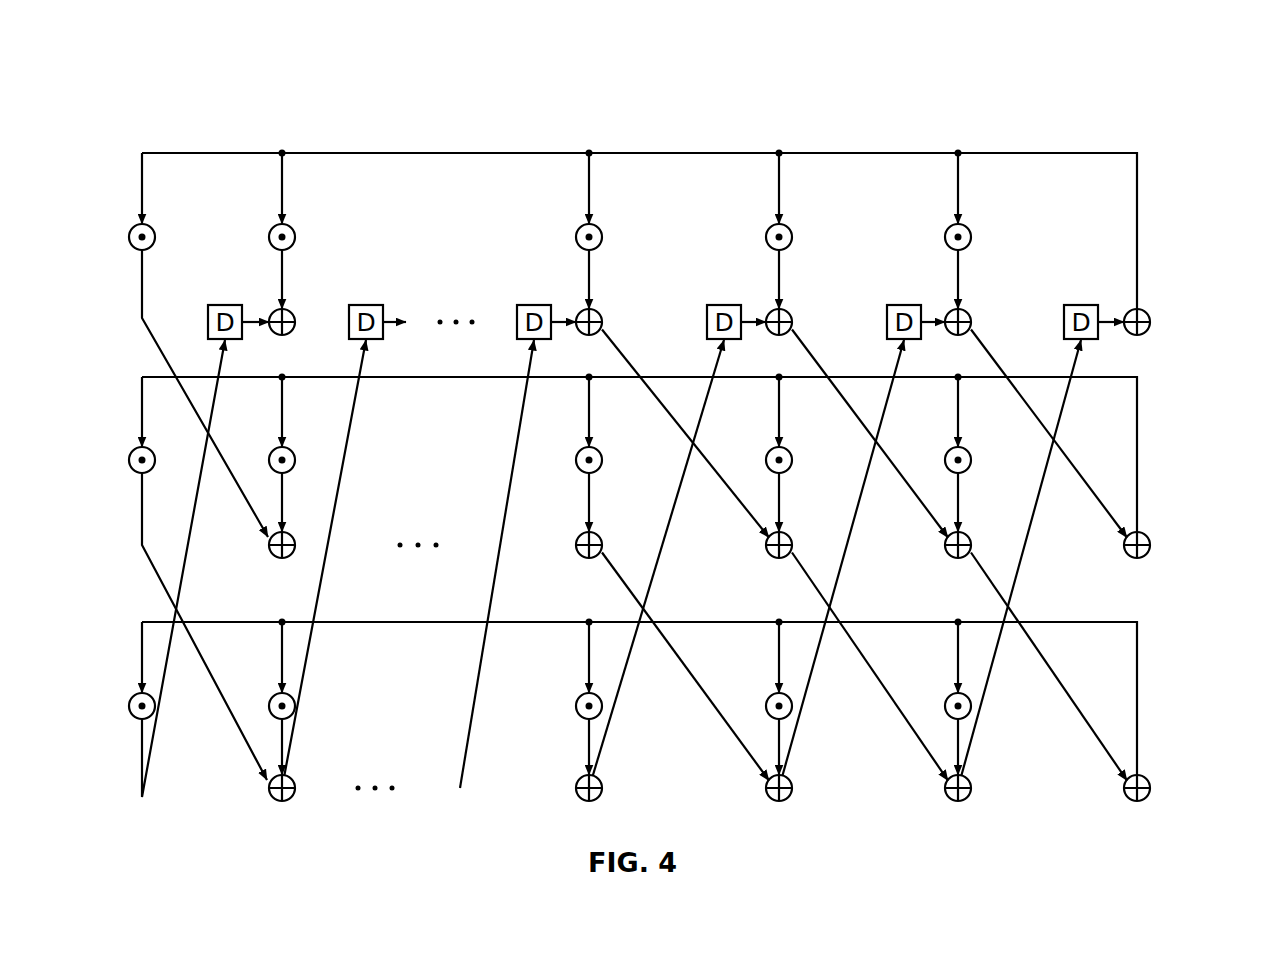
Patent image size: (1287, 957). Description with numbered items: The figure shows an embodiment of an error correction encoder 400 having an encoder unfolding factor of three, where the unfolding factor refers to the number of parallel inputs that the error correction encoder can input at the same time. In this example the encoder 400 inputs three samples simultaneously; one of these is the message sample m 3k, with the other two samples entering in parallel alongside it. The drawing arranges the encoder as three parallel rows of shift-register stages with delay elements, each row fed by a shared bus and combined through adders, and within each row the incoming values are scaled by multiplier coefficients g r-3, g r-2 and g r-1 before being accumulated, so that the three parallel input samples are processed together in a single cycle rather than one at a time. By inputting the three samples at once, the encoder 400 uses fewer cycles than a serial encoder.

The encoder 400 is at (691, 419).
The generator polynomial coefficient g_(r-3) multipliers r-3 is at (588, 474).
The generator polynomial coefficient g_(r-2) multipliers r-2 is at (778, 474).
The generator polynomial coefficient g_(r-1) multipliers r-1 is at (958, 474).
The message symbol input m_ 3k is at (1151, 322).